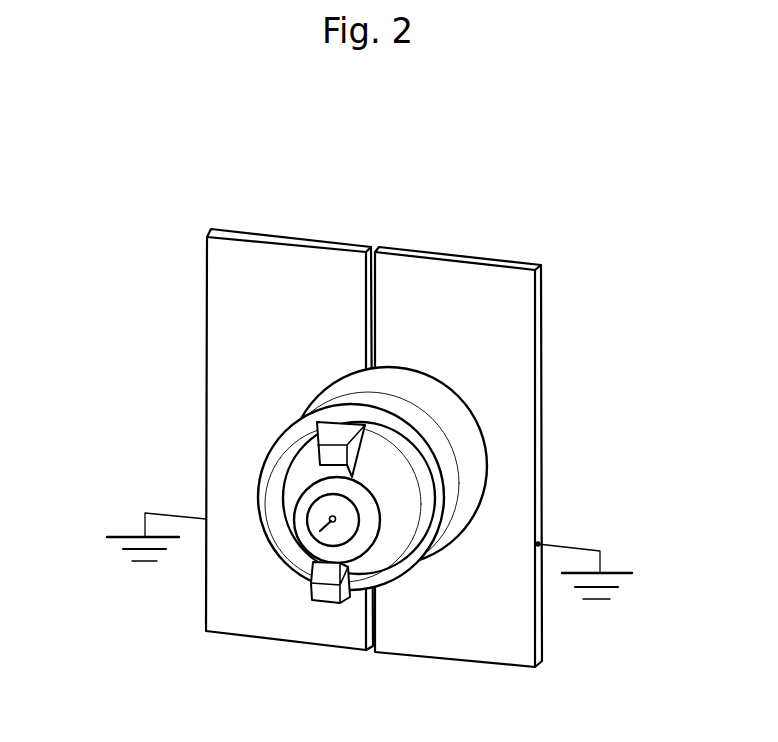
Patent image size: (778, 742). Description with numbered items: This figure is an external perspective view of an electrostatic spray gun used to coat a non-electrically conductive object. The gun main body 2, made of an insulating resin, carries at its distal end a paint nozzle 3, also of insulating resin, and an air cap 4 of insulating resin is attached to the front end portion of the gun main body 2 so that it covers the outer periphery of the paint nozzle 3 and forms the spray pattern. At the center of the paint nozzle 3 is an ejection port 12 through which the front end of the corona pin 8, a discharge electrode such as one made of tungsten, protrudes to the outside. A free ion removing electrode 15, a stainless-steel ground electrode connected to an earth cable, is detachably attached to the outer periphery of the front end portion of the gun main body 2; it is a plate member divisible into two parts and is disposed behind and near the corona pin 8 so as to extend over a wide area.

The gun main body 2 is at (448, 405).
The paint nozzle 3 is at (343, 523).
The air cap 4 is at (270, 443).
The corona pin 8 is at (325, 520).
The ejection port 12 is at (332, 520).
The free ion removing electrode 15 is at (252, 232).